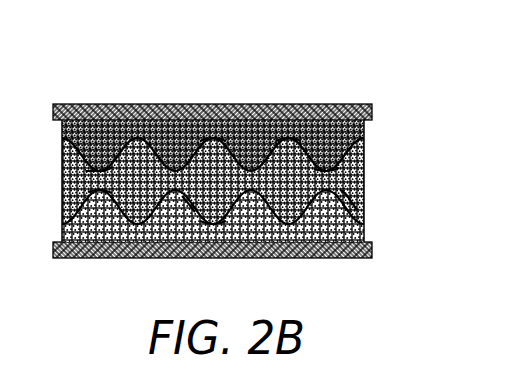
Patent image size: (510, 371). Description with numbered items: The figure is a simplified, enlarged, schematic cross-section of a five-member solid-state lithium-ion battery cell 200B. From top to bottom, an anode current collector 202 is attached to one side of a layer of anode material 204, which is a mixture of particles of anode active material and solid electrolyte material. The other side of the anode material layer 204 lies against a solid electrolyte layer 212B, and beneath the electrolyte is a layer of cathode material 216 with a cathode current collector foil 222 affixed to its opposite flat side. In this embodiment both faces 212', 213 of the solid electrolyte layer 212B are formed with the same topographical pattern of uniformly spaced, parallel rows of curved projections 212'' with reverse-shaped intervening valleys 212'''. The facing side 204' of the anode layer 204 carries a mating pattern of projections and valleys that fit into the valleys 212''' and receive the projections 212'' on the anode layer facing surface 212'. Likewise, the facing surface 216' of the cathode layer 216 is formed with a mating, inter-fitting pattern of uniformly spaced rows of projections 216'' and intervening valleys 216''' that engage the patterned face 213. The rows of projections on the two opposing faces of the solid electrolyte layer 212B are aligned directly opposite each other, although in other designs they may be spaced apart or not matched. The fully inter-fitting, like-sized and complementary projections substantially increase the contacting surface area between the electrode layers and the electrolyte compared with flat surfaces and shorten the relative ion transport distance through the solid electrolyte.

The cell 200B is at (225, 162).
The anode current collector 202 is at (143, 104).
The anode material layer 204 is at (254, 131).
The facing side of anode layer 204' is at (324, 216).
The anode layer facing surface of solid electrolyte layer 212' is at (78, 113).
The projections 212'' is at (204, 89).
The valleys 212''' is at (369, 113).
The solid electrolyte layer 212B is at (366, 155).
The cathode-facing face of solid electrolyte layer 213 is at (192, 208).
The cathode material layer 216 is at (252, 216).
The facing surface of cathode layer 216' is at (389, 190).
The cathode projections 216'' is at (56, 178).
The cathode valleys 216''' is at (242, 142).
The cathode current collector foil 222 is at (205, 258).